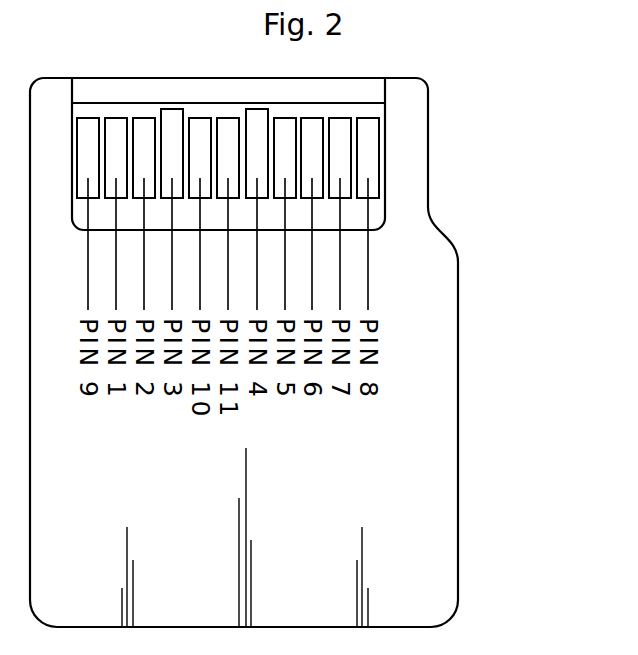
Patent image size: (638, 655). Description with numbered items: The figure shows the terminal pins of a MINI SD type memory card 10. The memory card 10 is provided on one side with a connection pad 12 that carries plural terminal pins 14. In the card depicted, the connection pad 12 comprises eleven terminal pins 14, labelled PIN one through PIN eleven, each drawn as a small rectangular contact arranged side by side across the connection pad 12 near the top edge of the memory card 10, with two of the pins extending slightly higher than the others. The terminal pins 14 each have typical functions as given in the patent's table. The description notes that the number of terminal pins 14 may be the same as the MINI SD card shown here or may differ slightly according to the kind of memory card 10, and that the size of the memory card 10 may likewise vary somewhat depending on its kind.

The memory card 10 is at (458, 300).
The connection pad 12 is at (373, 213).
The terminal pins 14 is at (370, 140).